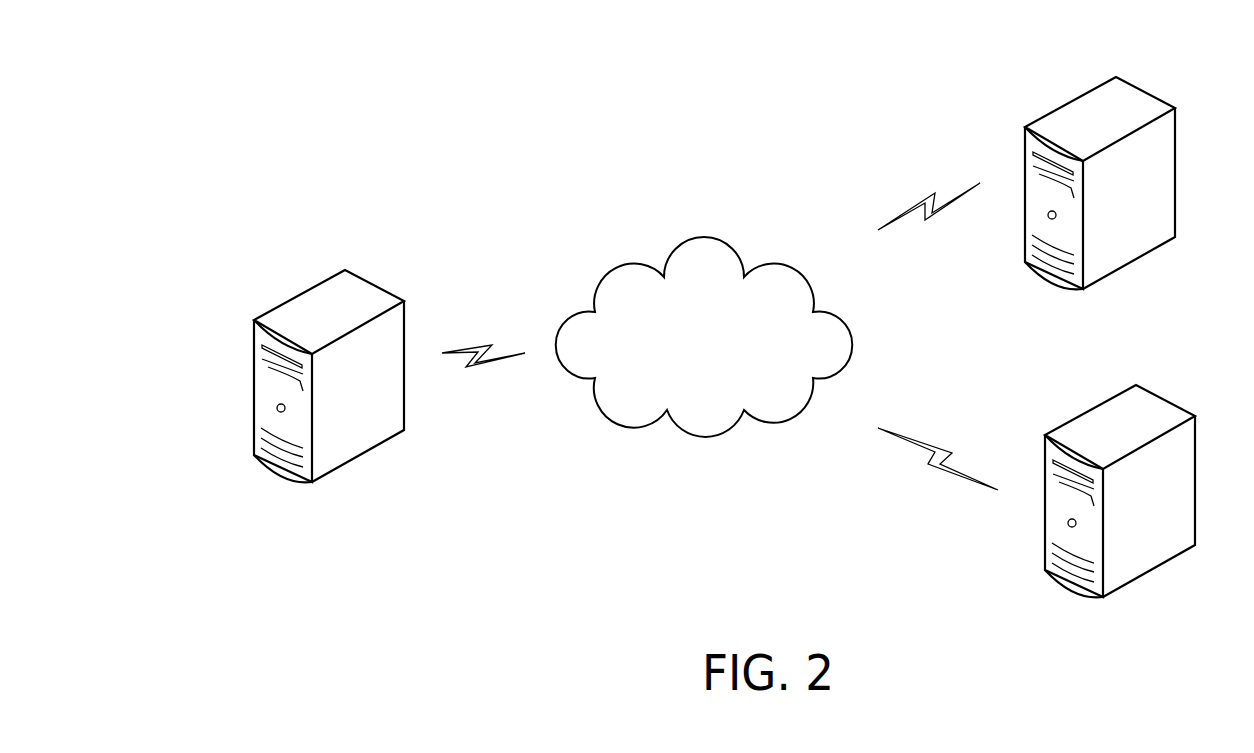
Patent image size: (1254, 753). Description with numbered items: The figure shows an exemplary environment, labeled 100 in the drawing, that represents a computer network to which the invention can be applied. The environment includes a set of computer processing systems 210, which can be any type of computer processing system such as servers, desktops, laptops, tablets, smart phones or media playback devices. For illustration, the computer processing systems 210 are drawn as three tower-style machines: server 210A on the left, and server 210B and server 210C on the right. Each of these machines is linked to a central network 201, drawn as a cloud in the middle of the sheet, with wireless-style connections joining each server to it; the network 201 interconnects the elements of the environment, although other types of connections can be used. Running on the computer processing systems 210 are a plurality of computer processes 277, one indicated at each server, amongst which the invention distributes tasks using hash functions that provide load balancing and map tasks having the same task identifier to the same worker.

The system 100 is at (273, 65).
The computer processing systems 210 is at (323, 113).
The network 201 is at (683, 372).
The computer processes 277 is at (348, 243).
The server 210A is at (386, 403).
The server 210B is at (1100, 183).
The server 210C is at (1120, 491).